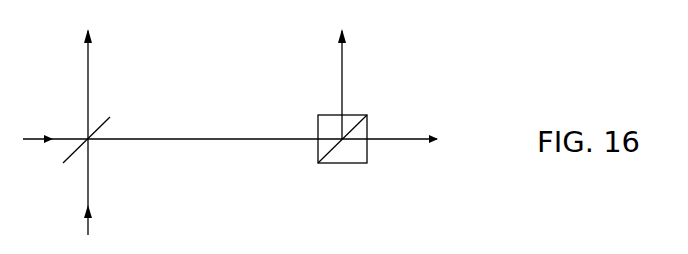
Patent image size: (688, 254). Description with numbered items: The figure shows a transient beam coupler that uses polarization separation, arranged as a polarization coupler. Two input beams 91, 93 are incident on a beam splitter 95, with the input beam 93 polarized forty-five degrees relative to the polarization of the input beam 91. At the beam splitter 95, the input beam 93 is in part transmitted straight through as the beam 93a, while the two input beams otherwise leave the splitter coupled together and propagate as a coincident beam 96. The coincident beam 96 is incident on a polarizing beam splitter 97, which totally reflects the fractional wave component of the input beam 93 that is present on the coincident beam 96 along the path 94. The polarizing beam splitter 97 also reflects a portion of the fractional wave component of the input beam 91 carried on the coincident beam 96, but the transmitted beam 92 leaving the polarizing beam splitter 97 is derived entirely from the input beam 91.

The input beam 91 is at (37, 139).
The transmitted beam 92 is at (405, 137).
The input beam 93 is at (90, 225).
The transmitted portion of beam 93 93a is at (88, 60).
The path 94 is at (342, 52).
The beam splitter 95 is at (103, 127).
The coincident beam 96 is at (207, 139).
The polarizing beam splitter 97 is at (367, 153).